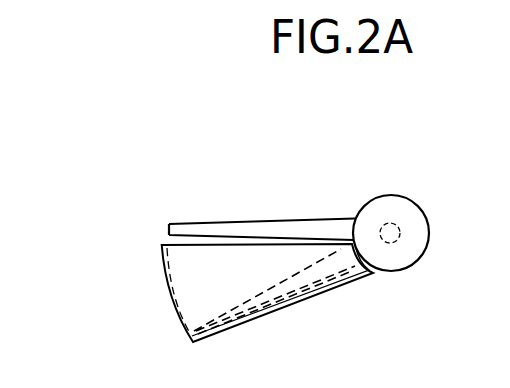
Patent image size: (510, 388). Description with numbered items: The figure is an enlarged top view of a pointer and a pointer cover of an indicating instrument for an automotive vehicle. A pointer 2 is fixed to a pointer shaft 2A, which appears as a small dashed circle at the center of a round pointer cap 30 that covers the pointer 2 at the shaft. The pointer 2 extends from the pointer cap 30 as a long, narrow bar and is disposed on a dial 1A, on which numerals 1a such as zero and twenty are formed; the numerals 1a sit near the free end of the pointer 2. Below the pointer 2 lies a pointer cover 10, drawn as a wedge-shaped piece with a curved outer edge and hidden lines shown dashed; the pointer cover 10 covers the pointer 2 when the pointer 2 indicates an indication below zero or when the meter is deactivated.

The numerals 1a is at (125, 222).
The dial 1A is at (263, 174).
The pointer 2 is at (323, 227).
The pointer shaft 2A is at (400, 228).
The pointer cover 10 is at (178, 293).
The pointer cap 30 is at (418, 259).